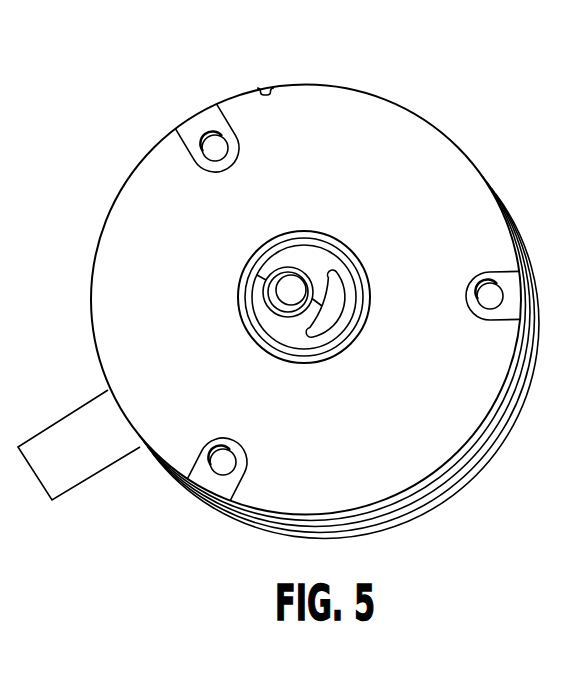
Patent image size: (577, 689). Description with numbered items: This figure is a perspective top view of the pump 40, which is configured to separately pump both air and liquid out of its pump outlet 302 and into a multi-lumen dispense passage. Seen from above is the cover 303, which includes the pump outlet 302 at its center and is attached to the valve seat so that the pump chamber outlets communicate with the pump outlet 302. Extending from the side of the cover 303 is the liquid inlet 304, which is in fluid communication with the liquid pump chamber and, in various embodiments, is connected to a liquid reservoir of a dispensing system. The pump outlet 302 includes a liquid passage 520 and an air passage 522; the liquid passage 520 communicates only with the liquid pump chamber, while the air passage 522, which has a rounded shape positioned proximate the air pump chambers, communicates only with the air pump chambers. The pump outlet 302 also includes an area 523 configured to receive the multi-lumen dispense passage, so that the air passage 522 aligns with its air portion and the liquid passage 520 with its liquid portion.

The pump 40 is at (486, 546).
The pump outlet 302 is at (321, 242).
The cover 303 is at (417, 150).
The liquid inlet 304 is at (80, 465).
The liquid passage 520 is at (288, 292).
The air passage 522 is at (340, 302).
The area 523 is at (295, 258).